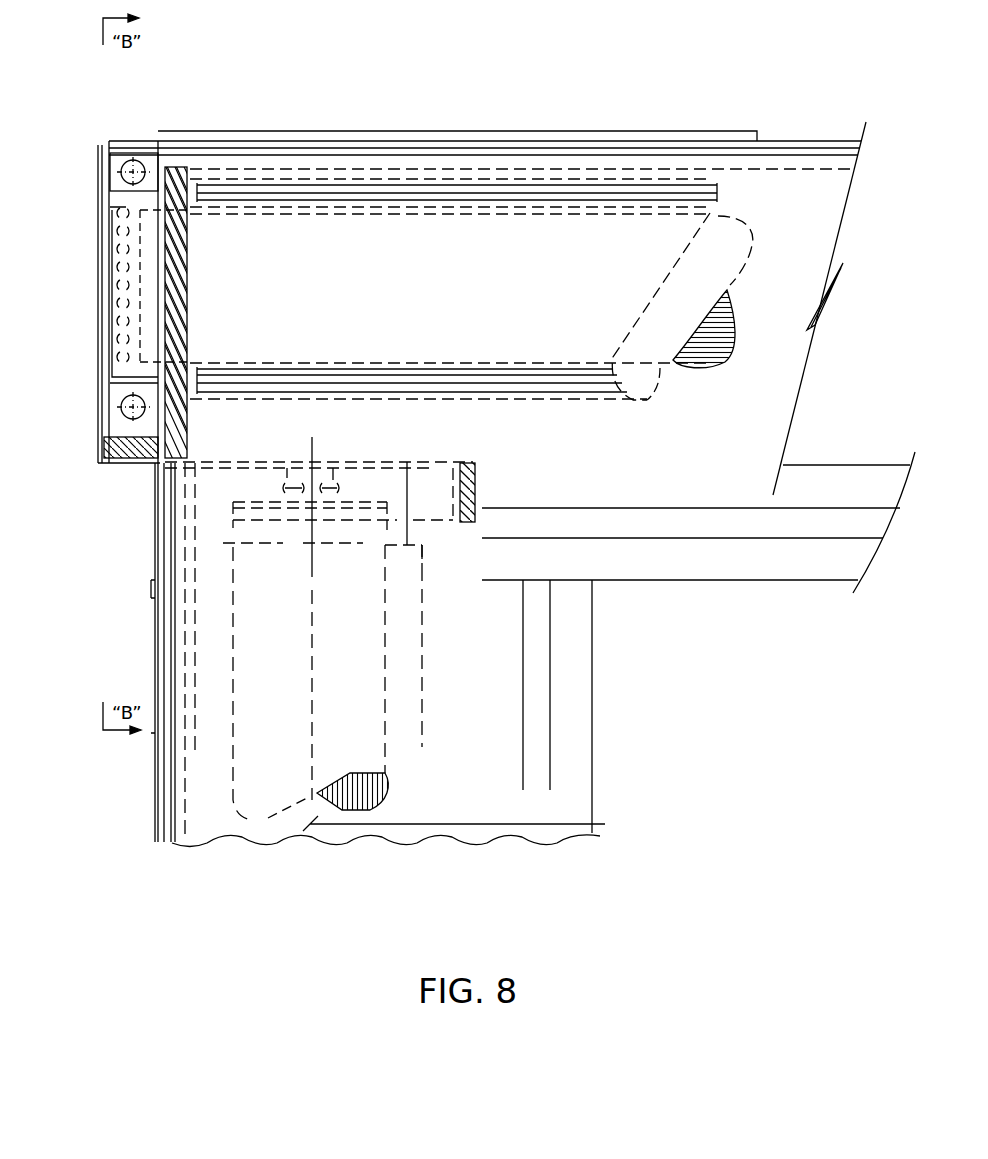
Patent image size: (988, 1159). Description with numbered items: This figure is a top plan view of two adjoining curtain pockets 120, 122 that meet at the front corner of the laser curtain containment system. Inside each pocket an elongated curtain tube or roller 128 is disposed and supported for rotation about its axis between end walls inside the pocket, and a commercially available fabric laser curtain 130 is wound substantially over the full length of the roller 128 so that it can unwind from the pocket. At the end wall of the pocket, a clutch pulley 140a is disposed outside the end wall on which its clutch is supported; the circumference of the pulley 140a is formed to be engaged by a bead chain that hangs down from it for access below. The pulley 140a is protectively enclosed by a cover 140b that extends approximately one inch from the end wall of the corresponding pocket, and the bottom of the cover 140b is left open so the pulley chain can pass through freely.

The curtain pocket 120 is at (158, 768).
The curtain pocket 122 is at (585, 130).
The curtain tube or roller 128 is at (447, 217).
The fabric laser curtain 130 is at (721, 201).
The clutch pulley 140a is at (100, 242).
The cover 140b is at (130, 140).